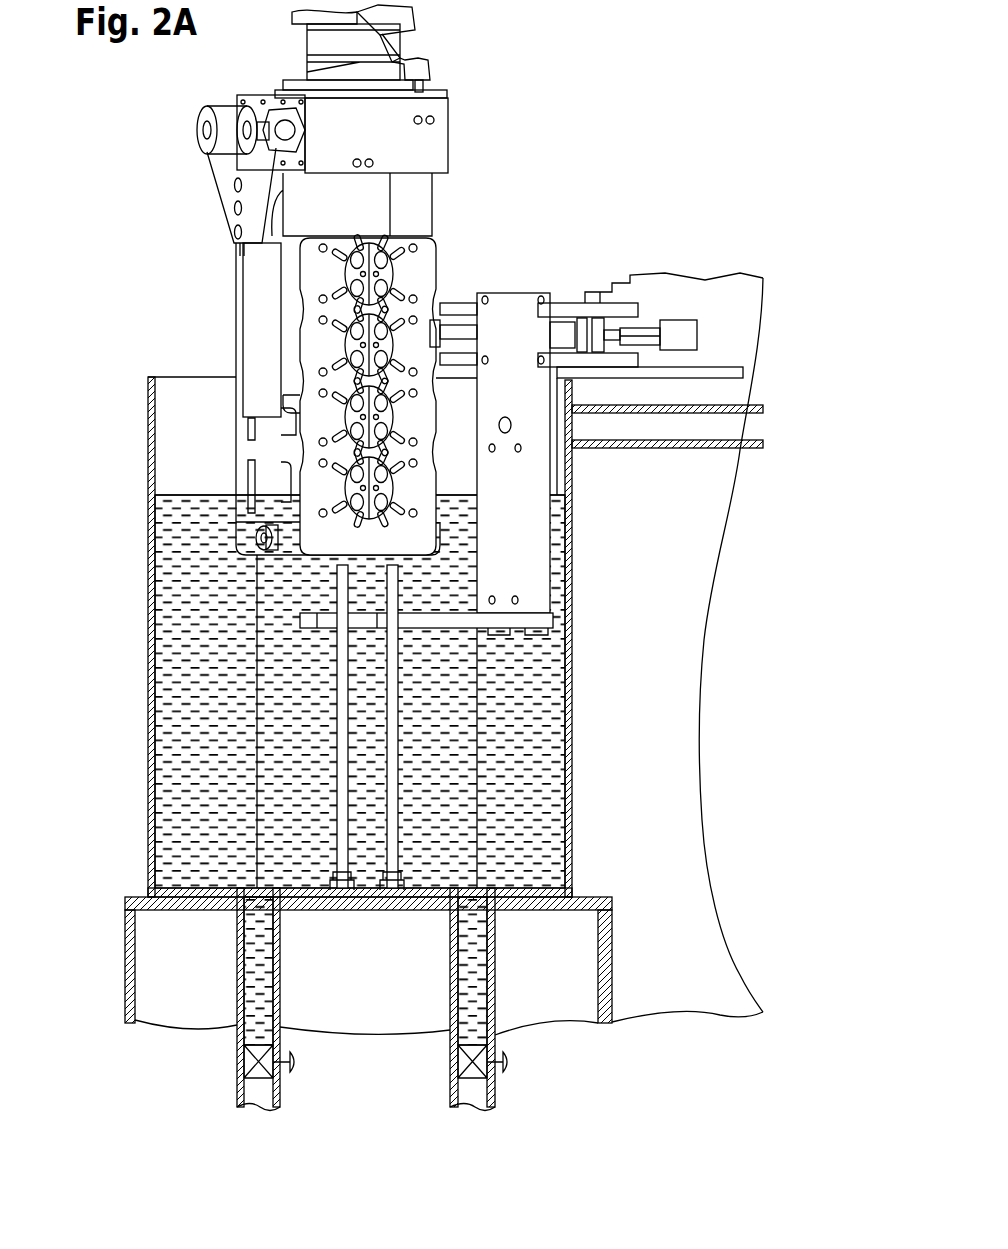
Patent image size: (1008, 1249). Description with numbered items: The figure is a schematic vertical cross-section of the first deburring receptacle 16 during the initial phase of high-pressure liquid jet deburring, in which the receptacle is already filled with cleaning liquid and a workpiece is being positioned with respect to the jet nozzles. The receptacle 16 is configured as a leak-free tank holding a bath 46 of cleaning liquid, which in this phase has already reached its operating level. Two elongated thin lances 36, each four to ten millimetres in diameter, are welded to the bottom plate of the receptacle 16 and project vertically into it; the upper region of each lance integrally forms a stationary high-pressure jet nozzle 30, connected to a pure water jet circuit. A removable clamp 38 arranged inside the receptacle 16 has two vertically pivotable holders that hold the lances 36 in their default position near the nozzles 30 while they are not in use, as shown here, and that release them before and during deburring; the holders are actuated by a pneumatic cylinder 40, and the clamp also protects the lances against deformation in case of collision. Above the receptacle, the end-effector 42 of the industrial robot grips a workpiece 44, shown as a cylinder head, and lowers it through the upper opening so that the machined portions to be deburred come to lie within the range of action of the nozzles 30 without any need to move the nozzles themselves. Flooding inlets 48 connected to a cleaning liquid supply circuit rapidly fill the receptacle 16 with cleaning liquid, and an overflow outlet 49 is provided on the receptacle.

The first deburring receptacle 16 is at (304, 637).
The high-pressure jet nozzle 30 is at (467, 762).
The lance 36 is at (340, 808).
The clamp 38 is at (527, 414).
The pneumatic cylinder 40 is at (590, 330).
The robot end-effector 42 is at (427, 138).
The workpiece 44 is at (420, 268).
The bath 46 is at (232, 791).
The flooding inlet 48 is at (248, 1003).
The overflow outlet 49 is at (625, 422).